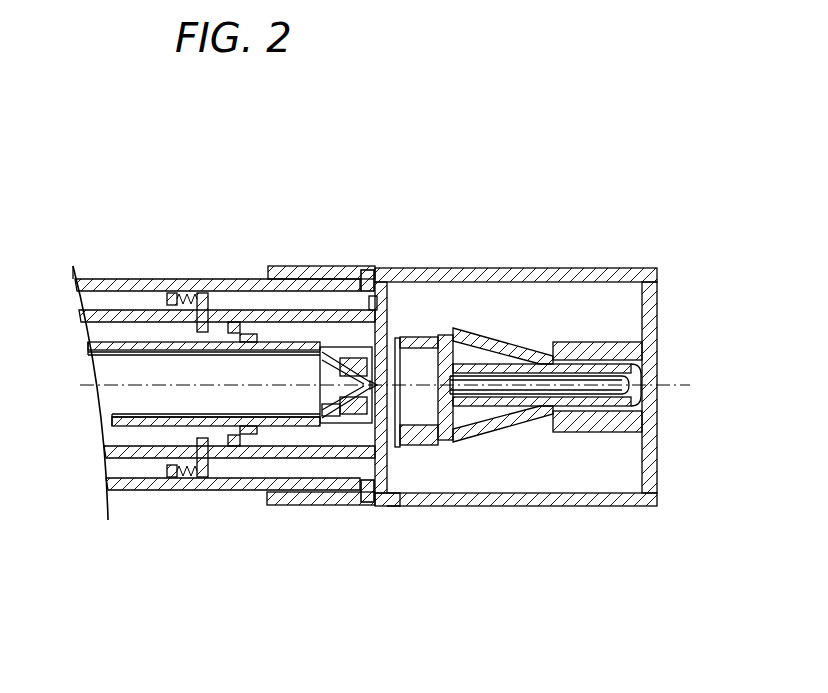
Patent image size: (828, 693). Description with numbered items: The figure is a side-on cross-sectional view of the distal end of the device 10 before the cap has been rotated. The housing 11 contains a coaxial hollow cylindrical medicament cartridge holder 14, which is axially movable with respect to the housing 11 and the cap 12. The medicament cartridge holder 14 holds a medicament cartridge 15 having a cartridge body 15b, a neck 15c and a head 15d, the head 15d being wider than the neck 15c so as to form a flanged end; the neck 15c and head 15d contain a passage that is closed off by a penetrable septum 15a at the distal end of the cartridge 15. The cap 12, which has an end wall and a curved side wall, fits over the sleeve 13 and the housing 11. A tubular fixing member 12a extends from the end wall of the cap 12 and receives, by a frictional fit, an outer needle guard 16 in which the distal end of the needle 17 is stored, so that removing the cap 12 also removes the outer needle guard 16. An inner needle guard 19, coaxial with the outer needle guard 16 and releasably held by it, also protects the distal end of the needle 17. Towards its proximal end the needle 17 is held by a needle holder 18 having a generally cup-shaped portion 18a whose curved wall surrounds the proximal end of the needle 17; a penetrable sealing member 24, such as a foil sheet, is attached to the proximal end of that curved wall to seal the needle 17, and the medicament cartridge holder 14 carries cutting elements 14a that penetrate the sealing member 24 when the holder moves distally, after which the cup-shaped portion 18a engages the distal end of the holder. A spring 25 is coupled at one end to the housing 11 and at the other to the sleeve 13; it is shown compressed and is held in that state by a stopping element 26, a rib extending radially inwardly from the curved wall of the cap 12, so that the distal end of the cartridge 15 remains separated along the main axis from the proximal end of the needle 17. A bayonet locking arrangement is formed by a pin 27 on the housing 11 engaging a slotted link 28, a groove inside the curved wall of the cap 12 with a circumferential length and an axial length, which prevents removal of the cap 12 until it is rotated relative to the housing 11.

The device 10 is at (651, 188).
The housing 11 is at (90, 280).
The cap 12 is at (493, 270).
The tubular fixing member 12a is at (566, 343).
The sleeve 13 is at (228, 283).
The medicament cartridge holder 14 is at (103, 310).
The cutting elements 14a is at (378, 308).
The medicament cartridge 15 is at (318, 340).
The penetrable septum 15a is at (372, 385).
The cartridge body 15b is at (175, 378).
The neck 15c is at (327, 409).
The head 15d is at (350, 414).
The outer needle guard 16 is at (540, 420).
The needle 17 is at (483, 396).
The needle holder 18 is at (428, 469).
The cup-shaped portion 18a is at (410, 432).
The inner needle guard 19 is at (517, 408).
The penetrable sealing member 24 is at (398, 370).
The spring 25 is at (195, 474).
The stopping element 26 is at (397, 505).
The pin 27 is at (363, 501).
The slotted link 28 is at (368, 274).